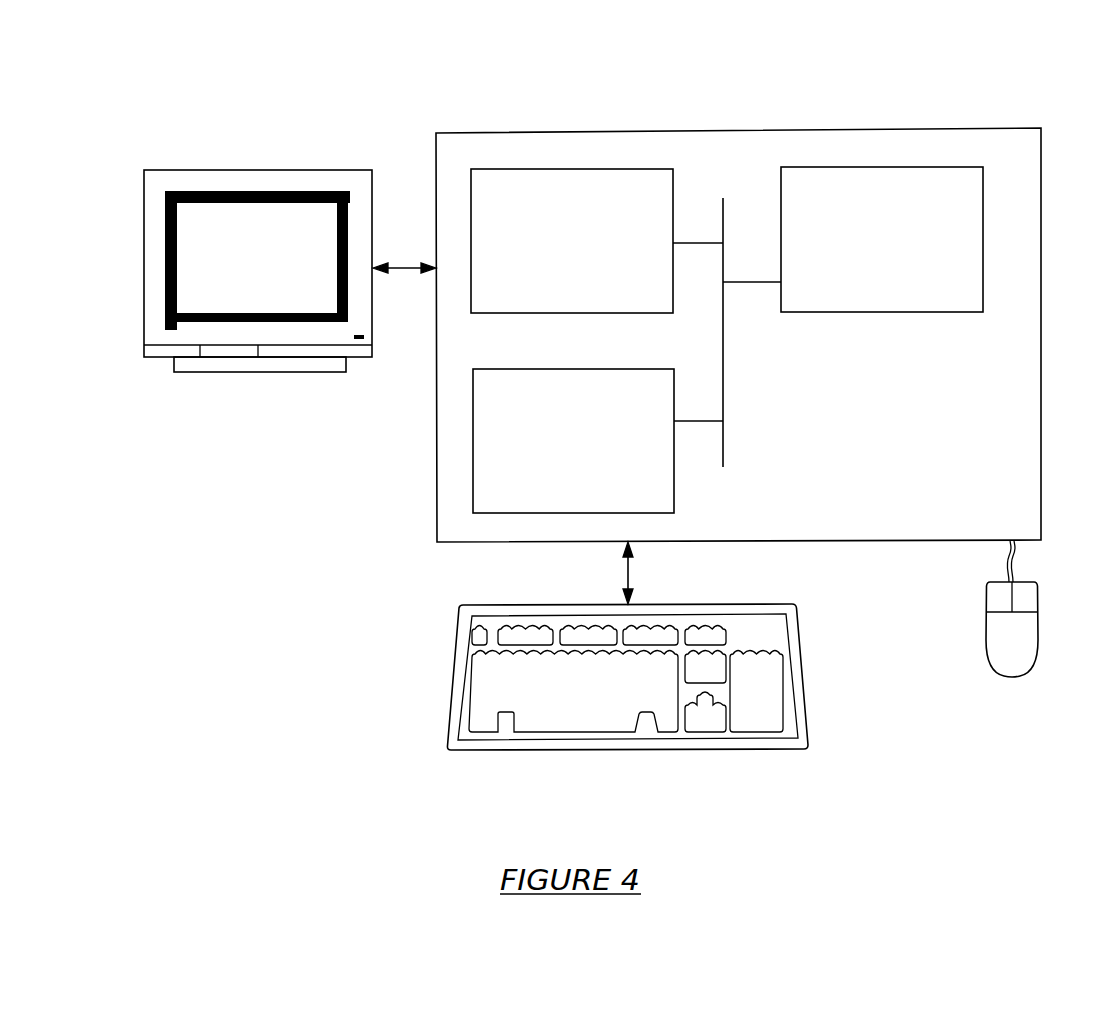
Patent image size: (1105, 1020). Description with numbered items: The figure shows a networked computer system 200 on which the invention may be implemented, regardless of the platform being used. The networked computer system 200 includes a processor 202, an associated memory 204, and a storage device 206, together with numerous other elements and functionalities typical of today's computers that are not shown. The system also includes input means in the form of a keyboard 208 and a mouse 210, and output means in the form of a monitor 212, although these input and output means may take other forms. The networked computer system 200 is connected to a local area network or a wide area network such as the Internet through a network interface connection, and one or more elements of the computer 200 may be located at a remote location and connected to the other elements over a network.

The networked computer system 200 is at (914, 73).
The processor 202 is at (917, 252).
The memory 204 is at (593, 252).
The storage device 206 is at (593, 450).
The keyboard 208 is at (588, 714).
The mouse 210 is at (1032, 649).
The monitor 212 is at (277, 276).